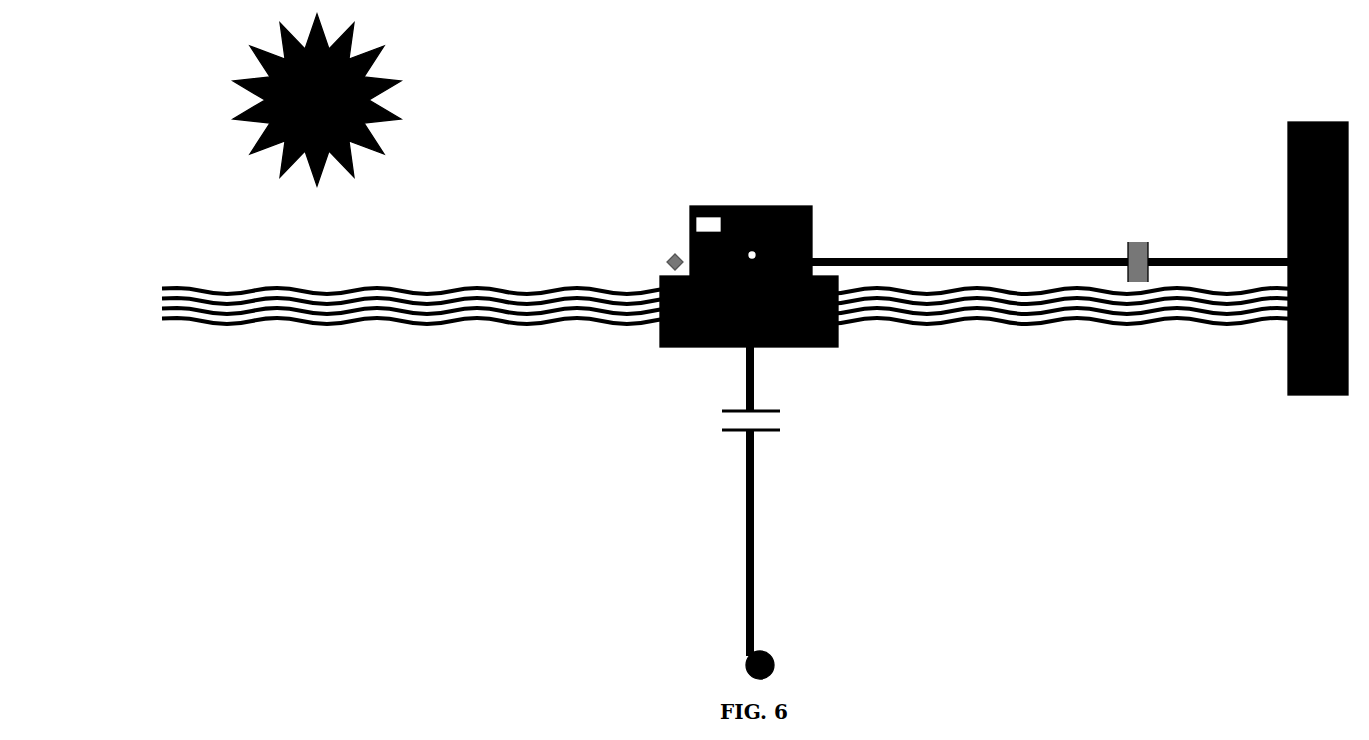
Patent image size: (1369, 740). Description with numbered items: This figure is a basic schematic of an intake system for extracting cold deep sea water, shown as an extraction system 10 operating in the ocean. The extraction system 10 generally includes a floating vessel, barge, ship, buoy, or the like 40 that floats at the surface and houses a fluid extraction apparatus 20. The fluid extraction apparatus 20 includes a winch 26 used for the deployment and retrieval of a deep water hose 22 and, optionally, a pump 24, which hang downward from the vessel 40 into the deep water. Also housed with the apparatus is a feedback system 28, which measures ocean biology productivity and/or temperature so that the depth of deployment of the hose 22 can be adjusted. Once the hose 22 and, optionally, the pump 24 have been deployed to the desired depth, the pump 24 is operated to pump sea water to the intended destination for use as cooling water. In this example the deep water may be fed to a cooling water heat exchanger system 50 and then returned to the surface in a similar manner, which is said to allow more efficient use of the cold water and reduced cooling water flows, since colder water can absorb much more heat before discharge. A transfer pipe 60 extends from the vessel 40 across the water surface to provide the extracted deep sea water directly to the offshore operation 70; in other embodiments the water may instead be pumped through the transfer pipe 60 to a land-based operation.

The extraction system 10 is at (573, 360).
The fluid extraction apparatus 20 is at (753, 208).
The deep water hose 22 is at (744, 487).
The pump 24 is at (774, 661).
The winch 26 is at (762, 240).
The feedback system 28 is at (712, 216).
The floating vessel 40 is at (838, 277).
The cooling water heat exchanger system 50 is at (658, 262).
The transfer pipe 60 is at (928, 252).
The offshore operation 70 is at (1287, 218).